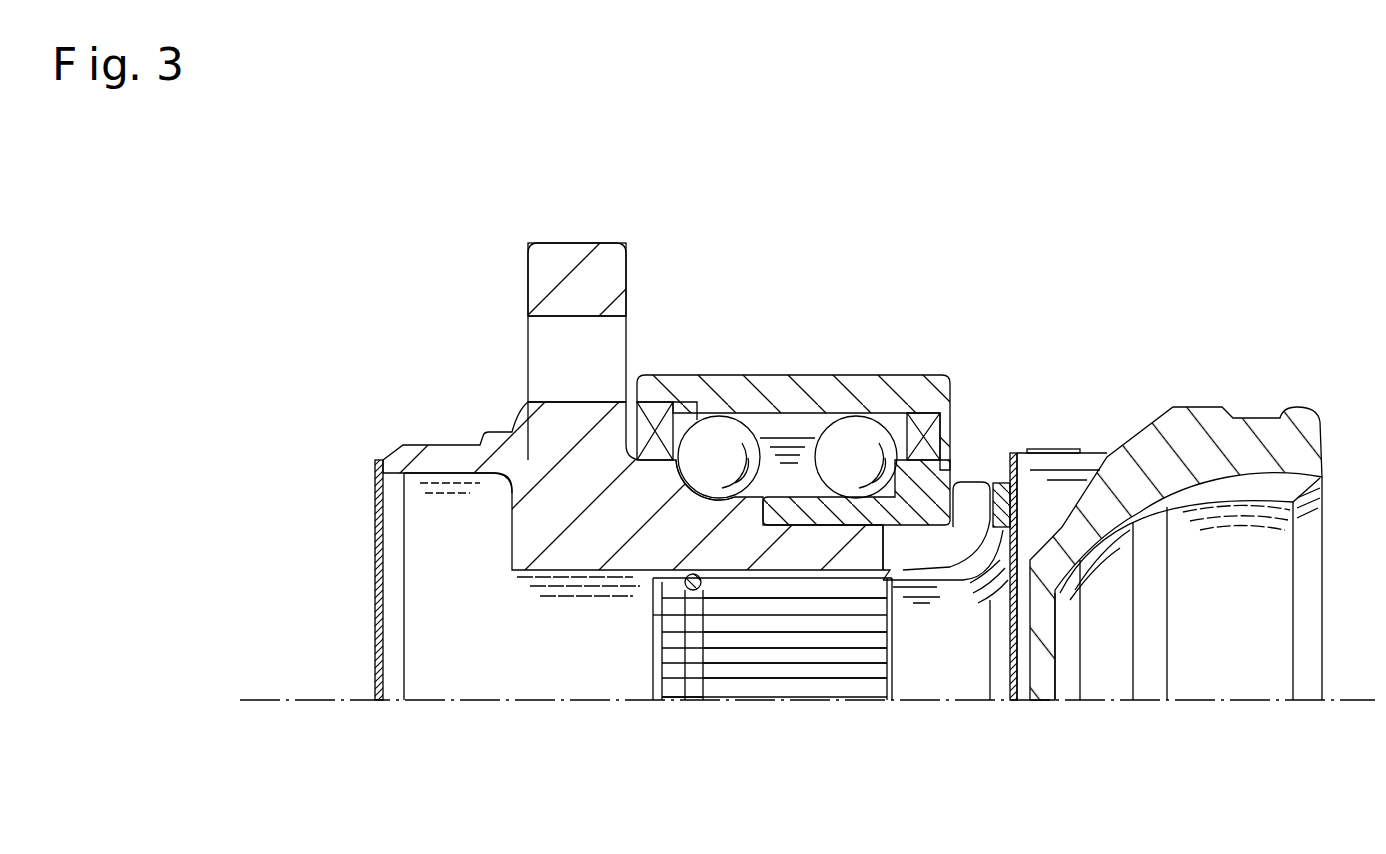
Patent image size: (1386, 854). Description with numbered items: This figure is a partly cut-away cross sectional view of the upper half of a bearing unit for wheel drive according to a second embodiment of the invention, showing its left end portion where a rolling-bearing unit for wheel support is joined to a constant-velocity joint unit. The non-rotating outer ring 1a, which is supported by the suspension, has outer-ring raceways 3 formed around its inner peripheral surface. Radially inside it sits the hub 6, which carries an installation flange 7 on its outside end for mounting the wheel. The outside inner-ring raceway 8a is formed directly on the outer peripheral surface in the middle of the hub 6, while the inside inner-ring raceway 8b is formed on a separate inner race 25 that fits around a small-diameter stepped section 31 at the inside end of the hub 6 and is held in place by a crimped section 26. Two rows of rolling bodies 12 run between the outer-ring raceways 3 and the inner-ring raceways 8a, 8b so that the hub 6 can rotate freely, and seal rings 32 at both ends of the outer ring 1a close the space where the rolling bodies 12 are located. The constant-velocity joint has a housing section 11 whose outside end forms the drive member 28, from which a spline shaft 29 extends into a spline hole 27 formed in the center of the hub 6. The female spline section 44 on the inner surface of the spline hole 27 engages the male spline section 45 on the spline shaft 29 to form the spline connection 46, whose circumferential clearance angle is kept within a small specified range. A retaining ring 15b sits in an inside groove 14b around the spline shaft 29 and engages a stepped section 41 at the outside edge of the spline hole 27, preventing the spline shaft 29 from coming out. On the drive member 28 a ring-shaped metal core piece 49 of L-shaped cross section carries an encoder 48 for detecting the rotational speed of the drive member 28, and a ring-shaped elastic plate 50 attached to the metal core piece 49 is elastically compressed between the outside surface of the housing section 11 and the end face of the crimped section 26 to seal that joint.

The outer ring 1a is at (860, 392).
The outer-ring raceways 3 is at (727, 415).
The hub 6 is at (482, 423).
The installation flange 7 is at (572, 262).
The outside inner-ring raceway 8a is at (688, 487).
The inside inner-ring raceway 8b is at (866, 575).
The housing section 11 is at (1222, 407).
The rolling bodies 12 is at (700, 437).
The inside groove 14b is at (683, 690).
The retaining ring 15b is at (655, 627).
The inner race 25 is at (788, 507).
The crimped section 26 is at (958, 482).
The spline hole 27 is at (750, 585).
The drive member 28 is at (963, 663).
The spline shaft 29 is at (803, 600).
The small-diameter stepped section 31 is at (905, 590).
The seal rings 32 is at (658, 420).
The stepped section 41 is at (684, 588).
The female spline section 44 is at (694, 640).
The male spline section 45 is at (722, 600).
The spline connection 46 is at (770, 590).
The encoder 48 is at (1040, 449).
The metal core piece 49 is at (1073, 690).
The elastic plate 50 is at (990, 640).